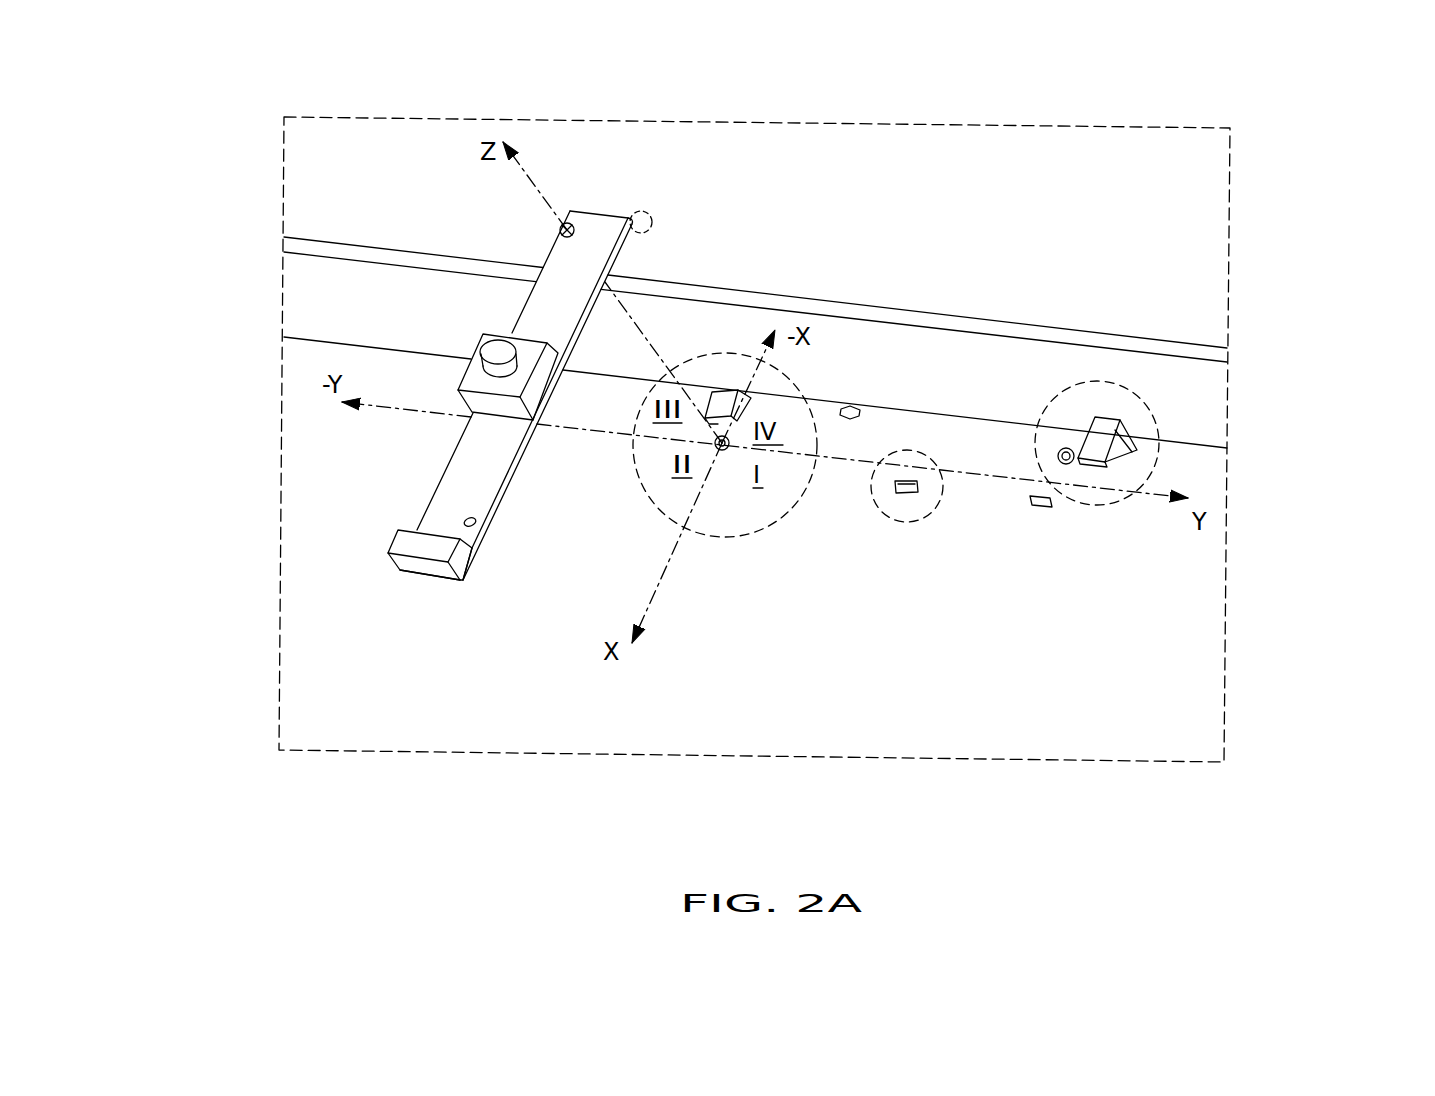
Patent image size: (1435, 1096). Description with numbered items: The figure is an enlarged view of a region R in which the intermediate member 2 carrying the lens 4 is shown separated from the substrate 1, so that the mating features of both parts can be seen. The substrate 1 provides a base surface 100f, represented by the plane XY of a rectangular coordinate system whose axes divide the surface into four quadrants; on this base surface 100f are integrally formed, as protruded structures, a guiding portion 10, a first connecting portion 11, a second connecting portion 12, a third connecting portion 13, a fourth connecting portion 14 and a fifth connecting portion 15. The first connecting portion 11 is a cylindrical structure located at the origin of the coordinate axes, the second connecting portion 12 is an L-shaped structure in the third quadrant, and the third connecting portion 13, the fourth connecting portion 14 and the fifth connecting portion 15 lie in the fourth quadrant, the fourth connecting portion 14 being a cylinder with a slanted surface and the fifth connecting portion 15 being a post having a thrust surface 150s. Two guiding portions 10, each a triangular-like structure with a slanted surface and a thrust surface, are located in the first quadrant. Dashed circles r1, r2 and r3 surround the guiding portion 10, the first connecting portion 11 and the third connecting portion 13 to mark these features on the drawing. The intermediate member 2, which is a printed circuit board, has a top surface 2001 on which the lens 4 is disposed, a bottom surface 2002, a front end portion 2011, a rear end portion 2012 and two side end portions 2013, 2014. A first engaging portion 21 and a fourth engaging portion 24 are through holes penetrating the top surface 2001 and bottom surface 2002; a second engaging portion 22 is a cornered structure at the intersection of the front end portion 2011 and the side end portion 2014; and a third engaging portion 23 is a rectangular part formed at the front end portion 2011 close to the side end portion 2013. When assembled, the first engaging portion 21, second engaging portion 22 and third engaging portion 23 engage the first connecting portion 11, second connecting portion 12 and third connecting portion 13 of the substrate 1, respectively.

The region R is at (198, 104).
The base surface 100f is at (325, 660).
The substrate 1 is at (1182, 333).
The intermediate member 2 is at (492, 353).
The side end portion 2014 is at (598, 211).
The rear end portion 2012 is at (437, 485).
The front end portion 2011 is at (533, 438).
The top surface 2001 is at (506, 472).
The bottom surface 2002 is at (500, 502).
The side end portion 2013 is at (427, 580).
The first engaging portion 21 is at (560, 232).
The second engaging portion 22 is at (638, 210).
The third engaging portion 23 is at (398, 542).
The fourth engaging portion 24 is at (478, 522).
The lens 4 is at (491, 354).
The first connecting portion 11 is at (730, 455).
The second connecting portion 12 is at (724, 396).
The second radius circle r2 is at (806, 396).
The thrust surface 150s is at (852, 406).
The fifth connecting portion 15 is at (852, 427).
The guiding portion 10 is at (903, 477).
The first radius circle r1 is at (934, 514).
The third connecting portion 13 is at (1132, 431).
The fourth connecting portion 14 is at (1062, 449).
The third radius circle r3 is at (1156, 470).